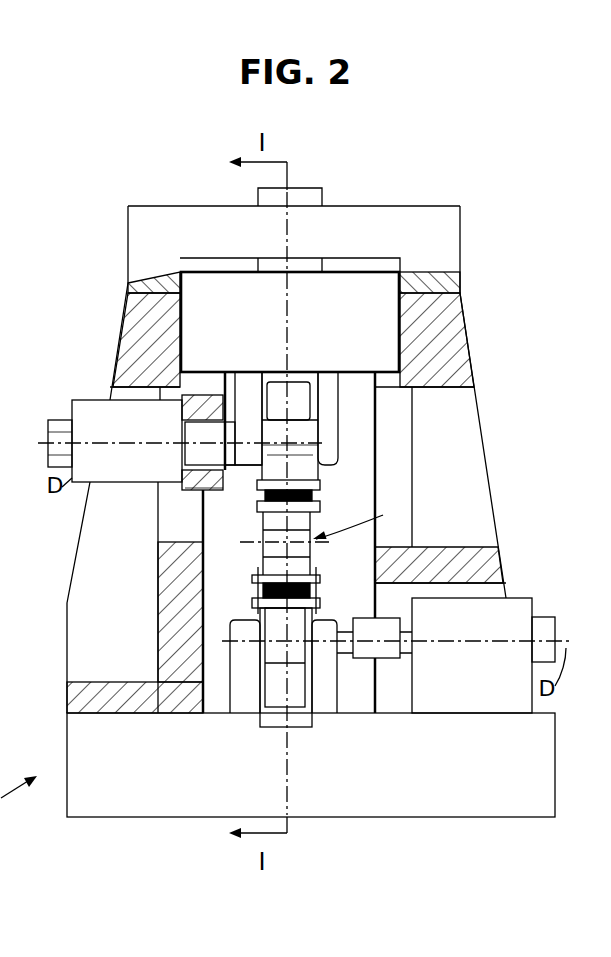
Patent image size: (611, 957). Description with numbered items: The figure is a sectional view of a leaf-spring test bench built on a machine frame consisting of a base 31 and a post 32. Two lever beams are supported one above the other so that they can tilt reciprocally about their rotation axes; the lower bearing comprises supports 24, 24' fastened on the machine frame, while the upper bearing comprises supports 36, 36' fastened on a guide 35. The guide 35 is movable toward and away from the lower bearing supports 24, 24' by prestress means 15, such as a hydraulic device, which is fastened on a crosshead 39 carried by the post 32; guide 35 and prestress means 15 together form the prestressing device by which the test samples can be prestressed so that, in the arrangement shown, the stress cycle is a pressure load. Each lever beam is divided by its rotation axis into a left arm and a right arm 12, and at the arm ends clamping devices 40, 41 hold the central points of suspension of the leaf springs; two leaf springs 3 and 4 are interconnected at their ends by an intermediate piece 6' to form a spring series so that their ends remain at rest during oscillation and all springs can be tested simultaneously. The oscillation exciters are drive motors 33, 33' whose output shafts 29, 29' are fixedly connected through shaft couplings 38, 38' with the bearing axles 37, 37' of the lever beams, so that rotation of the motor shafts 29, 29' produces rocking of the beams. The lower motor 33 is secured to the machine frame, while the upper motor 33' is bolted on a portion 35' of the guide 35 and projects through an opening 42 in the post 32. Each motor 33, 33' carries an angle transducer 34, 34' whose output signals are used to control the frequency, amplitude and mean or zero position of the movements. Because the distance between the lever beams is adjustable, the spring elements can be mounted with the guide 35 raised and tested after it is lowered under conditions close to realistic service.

The leaf spring 3 is at (318, 488).
The leaf spring 4 is at (322, 596).
The intermediate piece 6' is at (359, 517).
The right arm 12 is at (300, 432).
The prestress means 15 is at (308, 198).
The support 24 is at (310, 693).
The support 24' is at (249, 693).
The output shaft 29 is at (395, 668).
The output shaft 29' is at (180, 442).
The base 31 is at (377, 780).
The post 32 is at (447, 322).
The drive motor 33 is at (472, 677).
The drive motor 33' is at (127, 424).
The angle transducer 34 is at (539, 605).
The angle transducer 34' is at (58, 404).
The guide 35 is at (290, 315).
The portion of the guide 35' is at (168, 519).
The support 36 is at (362, 418).
The support 36' is at (230, 395).
The bearing axle 37 is at (339, 668).
The bearing axle 37' is at (315, 470).
The shaft coupling 38 is at (404, 632).
The shaft coupling 38' is at (104, 476).
The crosshead 39 is at (342, 241).
The clamping device 40 is at (270, 460).
The clamping device 41 is at (277, 632).
The opening 42 is at (193, 522).